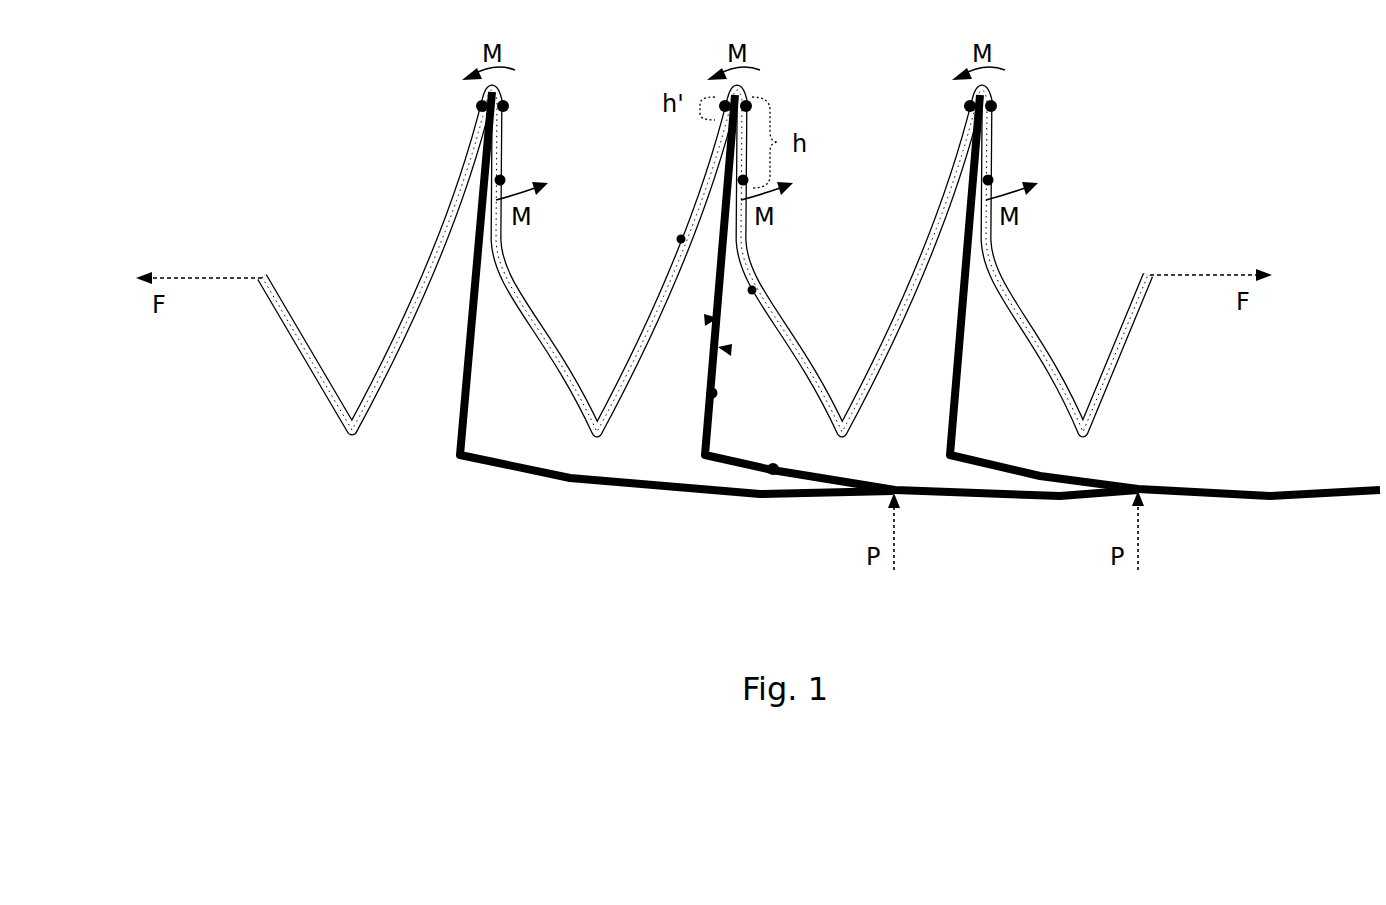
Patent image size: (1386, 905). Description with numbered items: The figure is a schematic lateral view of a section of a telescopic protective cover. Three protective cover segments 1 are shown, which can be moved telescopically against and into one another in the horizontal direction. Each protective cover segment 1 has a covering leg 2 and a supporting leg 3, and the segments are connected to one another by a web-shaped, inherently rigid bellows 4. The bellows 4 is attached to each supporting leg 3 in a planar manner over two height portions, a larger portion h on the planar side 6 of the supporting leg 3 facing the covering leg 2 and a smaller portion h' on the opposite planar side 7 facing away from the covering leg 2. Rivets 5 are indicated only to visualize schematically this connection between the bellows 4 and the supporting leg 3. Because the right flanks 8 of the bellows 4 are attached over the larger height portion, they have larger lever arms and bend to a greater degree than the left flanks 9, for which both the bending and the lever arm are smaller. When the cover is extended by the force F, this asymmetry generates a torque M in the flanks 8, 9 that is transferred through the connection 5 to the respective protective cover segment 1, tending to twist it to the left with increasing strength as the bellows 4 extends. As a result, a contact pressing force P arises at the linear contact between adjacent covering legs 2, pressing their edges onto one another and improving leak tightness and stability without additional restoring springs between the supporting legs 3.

The protective cover segment 1 is at (512, 548).
The covering leg 2 is at (773, 462).
The supporting leg 3 is at (708, 393).
The bellows 4 is at (278, 388).
The rivets 5 is at (952, 102).
The planar side 6 is at (731, 350).
The planar side 7 is at (706, 320).
The right flank 8 is at (755, 288).
The left flank 9 is at (678, 238).